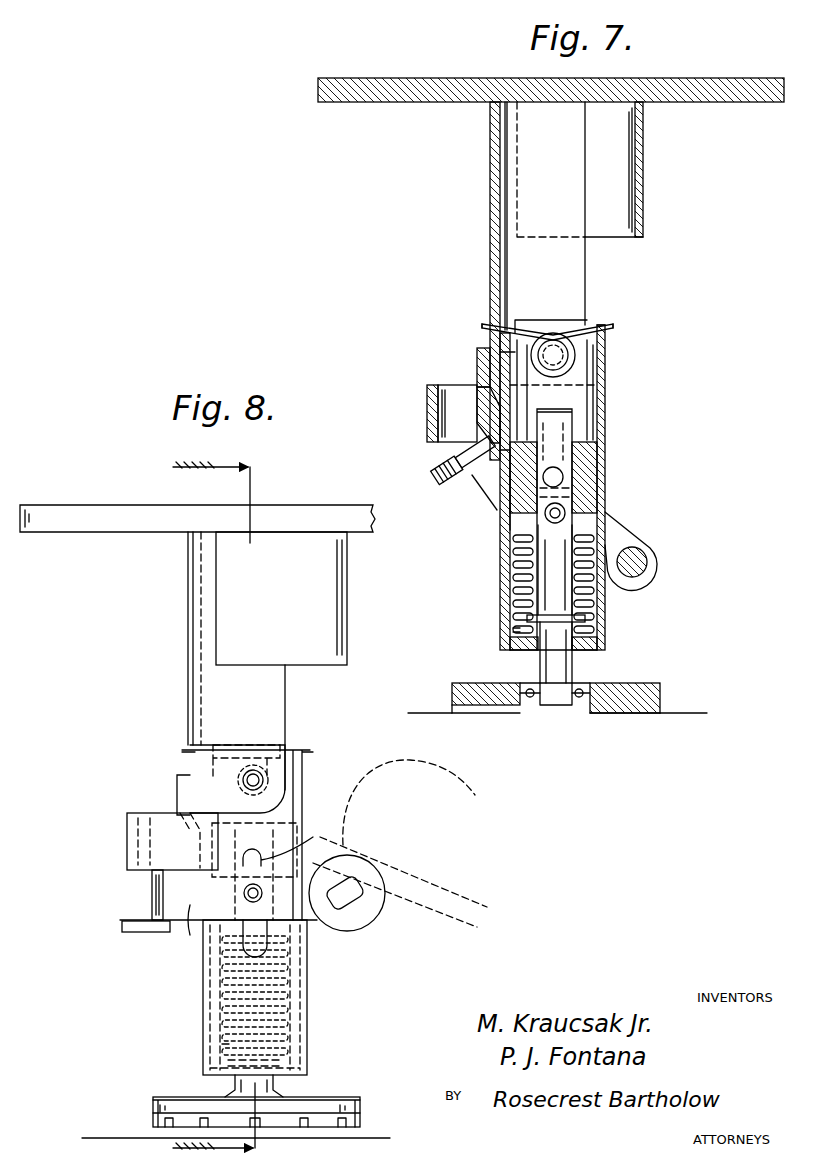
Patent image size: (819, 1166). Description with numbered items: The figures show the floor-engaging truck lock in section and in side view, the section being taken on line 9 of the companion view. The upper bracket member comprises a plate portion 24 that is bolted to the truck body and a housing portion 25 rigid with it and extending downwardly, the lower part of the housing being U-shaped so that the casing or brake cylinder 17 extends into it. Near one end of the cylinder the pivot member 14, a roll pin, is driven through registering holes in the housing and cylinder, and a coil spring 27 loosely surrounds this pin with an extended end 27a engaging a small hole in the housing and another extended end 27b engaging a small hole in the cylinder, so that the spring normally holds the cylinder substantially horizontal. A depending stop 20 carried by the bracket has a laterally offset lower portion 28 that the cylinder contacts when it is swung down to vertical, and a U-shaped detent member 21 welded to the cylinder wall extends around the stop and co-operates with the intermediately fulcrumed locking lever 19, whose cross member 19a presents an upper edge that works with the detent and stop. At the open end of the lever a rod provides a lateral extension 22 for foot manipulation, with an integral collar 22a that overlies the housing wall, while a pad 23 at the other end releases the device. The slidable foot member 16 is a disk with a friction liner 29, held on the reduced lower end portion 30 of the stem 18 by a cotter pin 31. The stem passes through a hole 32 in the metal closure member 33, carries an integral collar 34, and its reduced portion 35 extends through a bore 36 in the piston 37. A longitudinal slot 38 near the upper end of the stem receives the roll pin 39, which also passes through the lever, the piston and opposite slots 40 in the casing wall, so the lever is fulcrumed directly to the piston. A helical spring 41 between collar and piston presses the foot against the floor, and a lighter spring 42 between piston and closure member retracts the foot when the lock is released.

In FIG. 8, the section line 9- 9 is at (214, 805).
In FIG. 7, the pivot member 14 is at (552, 342).
In FIG. 8, the pivot member 14 is at (255, 770).
In FIG. 7, the slidable foot member 16 is at (658, 684).
In FIG. 8, the slidable foot member 16 is at (160, 1097).
In FIG. 7, the casing or brake cylinder 17 is at (604, 385).
In FIG. 8, the casing or brake cylinder 17 is at (293, 980).
In FIG. 7, the stem 18 is at (568, 668).
In FIG. 8, the stem 18 is at (273, 1083).
In FIG. 7, the intermediately fulcrumed locking lever 19 is at (618, 532).
In FIG. 8, the intermediately fulcrumed locking lever 19 is at (189, 933).
In FIG. 7, the cross member 19a is at (503, 508).
In FIG. 8, the cross member 19a is at (152, 900).
In FIG. 7, the depending stop 20 is at (478, 356).
In FIG. 8, the depending stop 20 is at (177, 792).
In FIG. 7, the detent member 21 is at (427, 413).
In FIG. 8, the detent member 21 is at (127, 853).
In FIG. 8, the rod-like lateral extension 22 is at (349, 895).
In FIG. 8, the integral collar 22a is at (368, 873).
In FIG. 7, the pad 23 is at (443, 477).
In FIG. 8, the pad 23 is at (140, 933).
In FIG. 7, the plate portion 24 is at (337, 92).
In FIG. 7, the housing portion 25 is at (634, 183).
In FIG. 8, the housing portion 25 is at (318, 617).
In FIG. 7, the coil spring 27 is at (531, 328).
In FIG. 8, the coil spring 27 is at (232, 751).
In FIG. 7, the extended end of coil spring 27a is at (483, 323).
In FIG. 7, the extended end of coil spring 27b is at (606, 323).
In FIG. 7, the lower portion of stop 28 is at (500, 413).
In FIG. 8, the lower portion of stop 28 is at (190, 856).
In FIG. 7, the liner 29 is at (661, 698).
In FIG. 8, the liner 29 is at (160, 1116).
In FIG. 7, the reduced lower end portion 30 is at (553, 705).
In FIG. 7, the cotter pin 31 is at (578, 708).
In FIG. 7, the hole 32 is at (538, 650).
In FIG. 7, the metal closure member 33 is at (588, 643).
In FIG. 7, the collar 34 is at (586, 620).
In FIG. 8, the collar 34 is at (212, 1040).
In FIG. 7, the reduced stem portion 35 is at (545, 582).
In FIG. 8, the reduced stem portion 35 is at (300, 965).
In FIG. 7, the bore 36 is at (556, 480).
In FIG. 7, the piston 37 is at (583, 450).
In FIG. 8, the piston 37 is at (284, 818).
In FIG. 7, the longitudinal slot 38 is at (567, 490).
In FIG. 7, the roll pin 39 is at (545, 514).
In FIG. 8, the roll pin 39 is at (263, 892).
In FIG. 7, the slots in casing wall 40 is at (573, 426).
In FIG. 8, the slots in casing wall 40 is at (300, 850).
In FIG. 7, the helical spring 41 is at (513, 563).
In FIG. 8, the helical spring 41 is at (218, 992).
In FIG. 7, the lighter spring 42 is at (523, 632).
In FIG. 8, the lighter spring 42 is at (217, 1014).